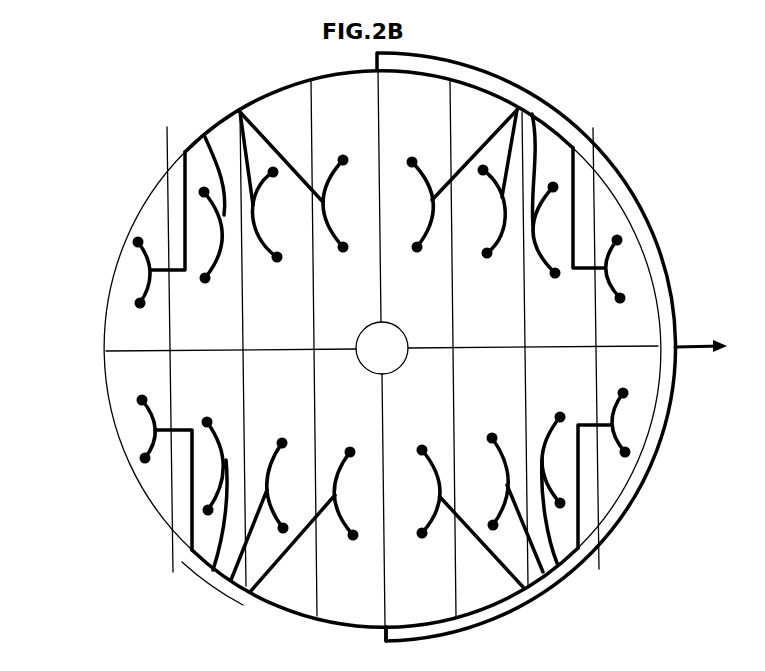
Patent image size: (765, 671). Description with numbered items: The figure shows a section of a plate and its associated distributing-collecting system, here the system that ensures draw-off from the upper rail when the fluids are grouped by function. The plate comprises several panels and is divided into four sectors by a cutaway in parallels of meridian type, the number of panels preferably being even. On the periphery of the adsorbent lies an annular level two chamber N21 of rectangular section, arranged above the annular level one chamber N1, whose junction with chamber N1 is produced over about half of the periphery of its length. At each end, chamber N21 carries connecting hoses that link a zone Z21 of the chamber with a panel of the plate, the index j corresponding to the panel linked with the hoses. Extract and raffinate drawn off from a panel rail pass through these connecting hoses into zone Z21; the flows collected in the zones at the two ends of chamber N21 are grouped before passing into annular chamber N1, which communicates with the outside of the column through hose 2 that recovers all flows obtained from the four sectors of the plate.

The annular level 1 chamber N1 is at (618, 175).
The annular level 2 chamber N21 is at (545, 123).
The hose 2 is at (692, 343).
The zone of the annular chamber Z21 is at (208, 586).
The index of a panel j is at (378, 631).